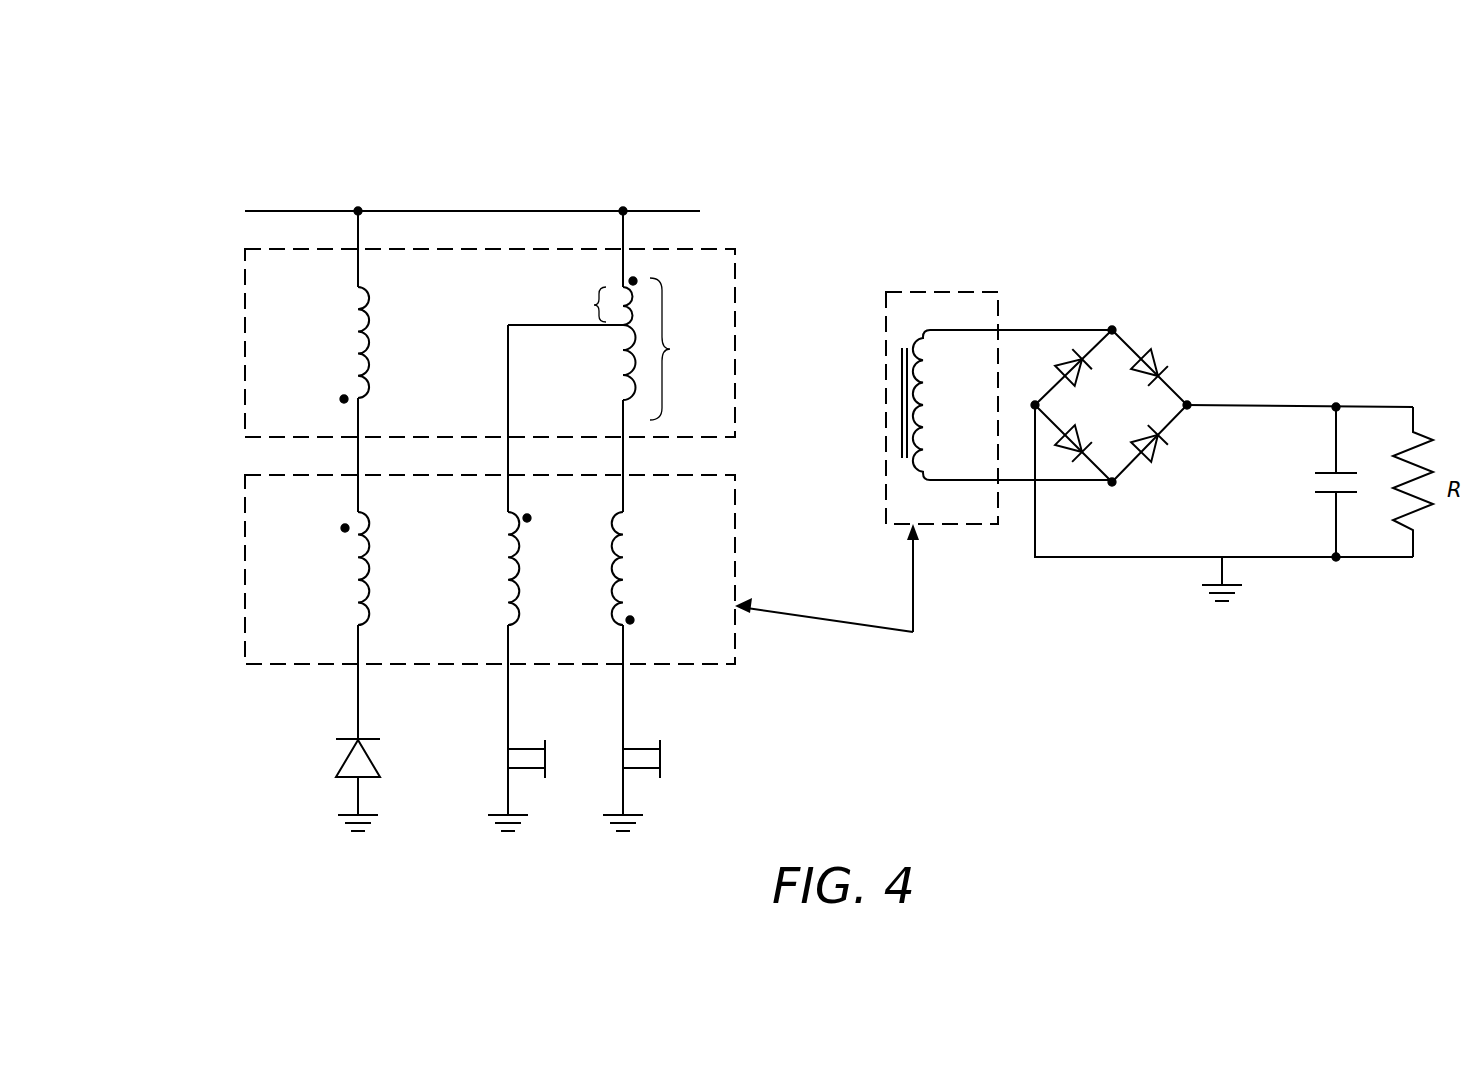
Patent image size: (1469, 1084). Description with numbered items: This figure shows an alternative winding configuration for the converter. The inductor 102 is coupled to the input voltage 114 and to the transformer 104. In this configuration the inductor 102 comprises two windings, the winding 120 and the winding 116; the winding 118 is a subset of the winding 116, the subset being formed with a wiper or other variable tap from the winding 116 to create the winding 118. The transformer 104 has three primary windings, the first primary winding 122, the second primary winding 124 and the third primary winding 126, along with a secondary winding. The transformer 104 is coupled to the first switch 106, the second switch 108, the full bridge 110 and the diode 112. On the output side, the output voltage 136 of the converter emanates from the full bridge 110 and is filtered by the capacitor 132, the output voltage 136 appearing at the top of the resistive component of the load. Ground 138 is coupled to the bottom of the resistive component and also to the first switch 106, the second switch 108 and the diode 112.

The inductor 102 is at (243, 425).
The transformer 104 is at (735, 520).
The switch Q1 106 is at (614, 760).
The switch Q2 108 is at (498, 760).
The full bridge 110 is at (1130, 337).
The diode D1 112 is at (334, 760).
The input voltage 114 is at (502, 211).
The winding NLA 116 is at (618, 352).
The winding NLB 118 is at (583, 303).
The winding NLC 120 is at (350, 325).
The winding NPA 122 is at (638, 548).
The winding NPB 124 is at (503, 548).
The winding NPC 126 is at (376, 563).
The capacitor 132 is at (1318, 470).
The output voltage 136 is at (1325, 392).
The ground 138 is at (352, 845).